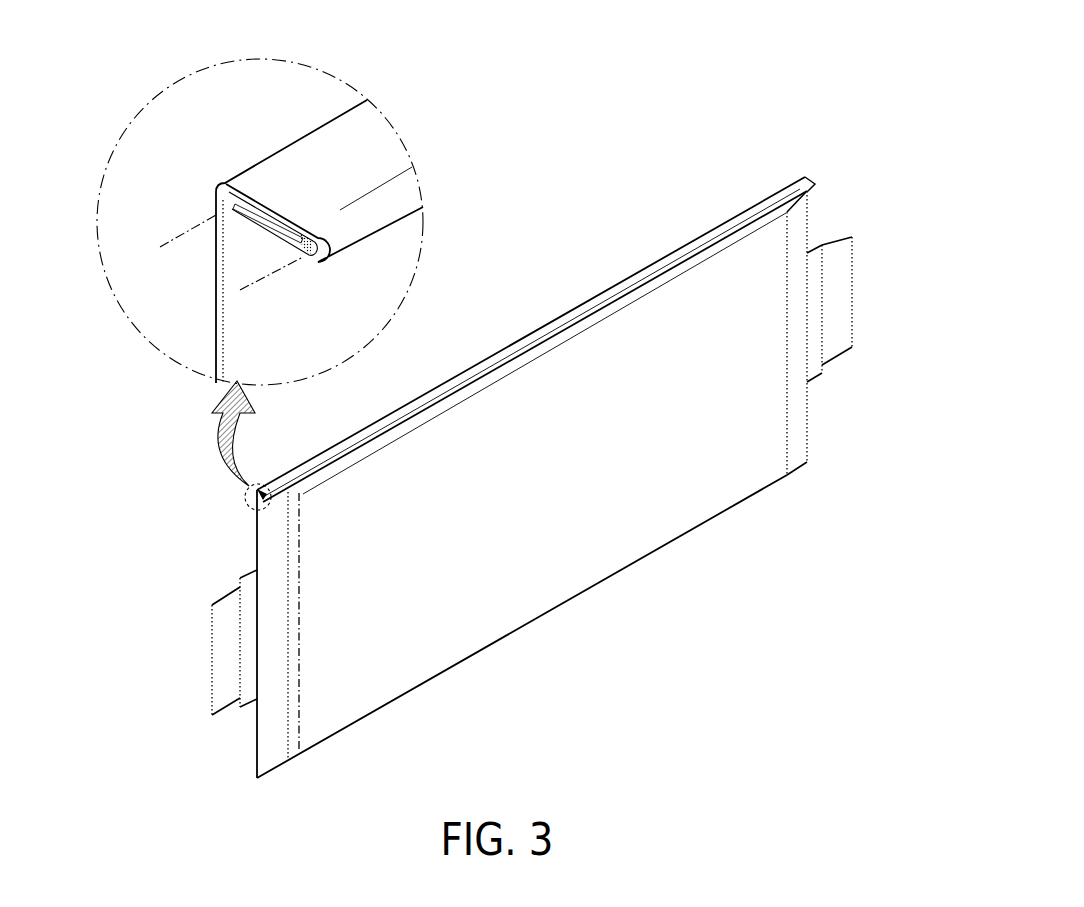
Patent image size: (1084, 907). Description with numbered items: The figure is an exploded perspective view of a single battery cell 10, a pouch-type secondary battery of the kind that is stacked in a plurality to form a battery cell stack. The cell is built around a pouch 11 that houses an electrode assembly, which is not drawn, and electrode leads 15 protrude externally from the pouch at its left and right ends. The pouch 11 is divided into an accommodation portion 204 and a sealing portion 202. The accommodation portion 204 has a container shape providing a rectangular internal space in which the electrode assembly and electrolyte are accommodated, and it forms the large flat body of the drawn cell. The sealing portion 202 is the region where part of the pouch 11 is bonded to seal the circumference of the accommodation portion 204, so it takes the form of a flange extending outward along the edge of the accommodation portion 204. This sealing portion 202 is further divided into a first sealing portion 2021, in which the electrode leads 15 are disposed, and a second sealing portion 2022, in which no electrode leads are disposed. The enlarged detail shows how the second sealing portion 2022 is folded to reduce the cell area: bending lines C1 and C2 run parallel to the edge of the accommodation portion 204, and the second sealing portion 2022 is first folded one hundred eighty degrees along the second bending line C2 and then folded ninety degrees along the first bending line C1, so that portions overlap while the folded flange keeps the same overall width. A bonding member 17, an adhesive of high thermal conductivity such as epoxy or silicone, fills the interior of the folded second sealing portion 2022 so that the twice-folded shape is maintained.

The battery cell 10 is at (470, 25).
The pouch 11 is at (579, 601).
The electrode lead 15 is at (832, 338).
The bonding member 17 is at (304, 258).
The sealing portion 202 is at (663, 118).
The first sealing portion 2021 is at (237, 263).
The second sealing portion 2022 is at (303, 160).
The accommodation portion 204 is at (518, 425).
The first bending line C1 is at (185, 232).
The second bending line C2 is at (270, 278).